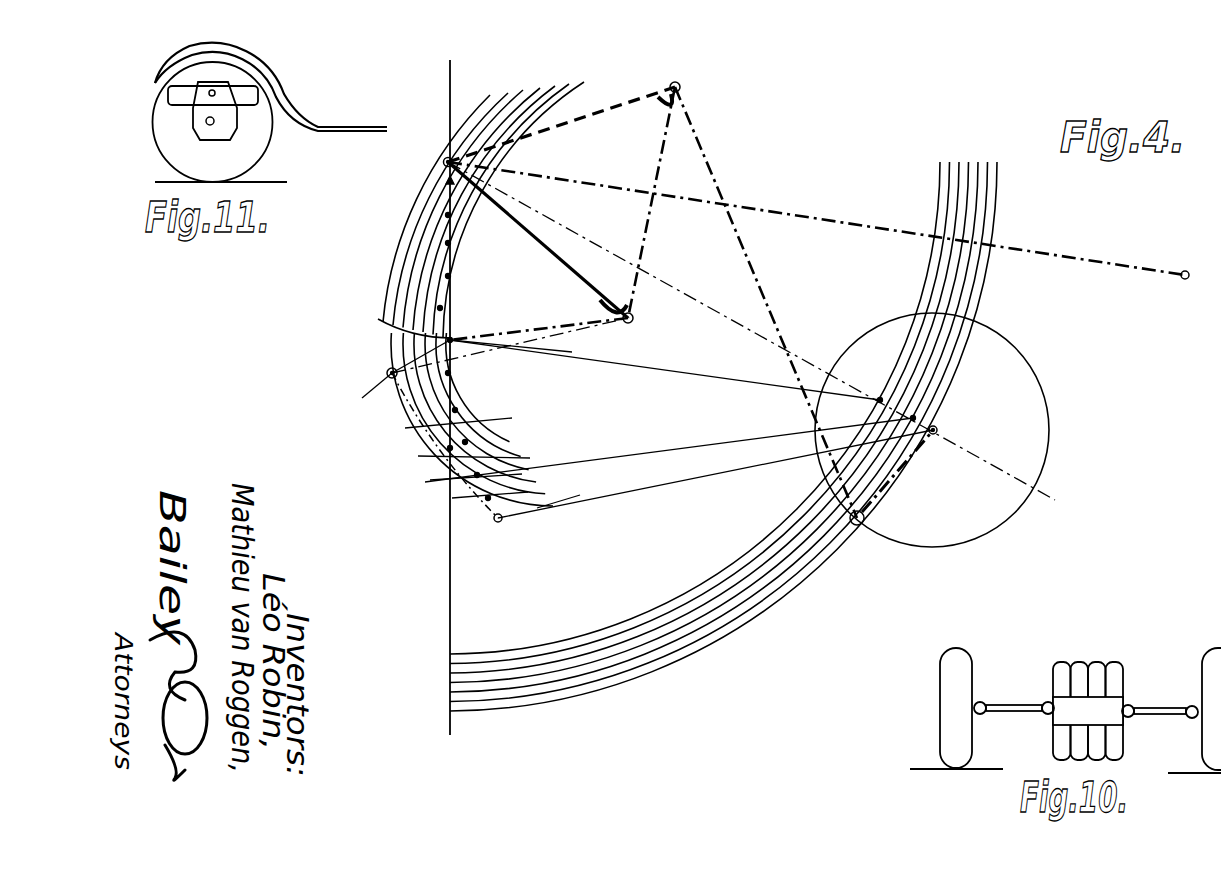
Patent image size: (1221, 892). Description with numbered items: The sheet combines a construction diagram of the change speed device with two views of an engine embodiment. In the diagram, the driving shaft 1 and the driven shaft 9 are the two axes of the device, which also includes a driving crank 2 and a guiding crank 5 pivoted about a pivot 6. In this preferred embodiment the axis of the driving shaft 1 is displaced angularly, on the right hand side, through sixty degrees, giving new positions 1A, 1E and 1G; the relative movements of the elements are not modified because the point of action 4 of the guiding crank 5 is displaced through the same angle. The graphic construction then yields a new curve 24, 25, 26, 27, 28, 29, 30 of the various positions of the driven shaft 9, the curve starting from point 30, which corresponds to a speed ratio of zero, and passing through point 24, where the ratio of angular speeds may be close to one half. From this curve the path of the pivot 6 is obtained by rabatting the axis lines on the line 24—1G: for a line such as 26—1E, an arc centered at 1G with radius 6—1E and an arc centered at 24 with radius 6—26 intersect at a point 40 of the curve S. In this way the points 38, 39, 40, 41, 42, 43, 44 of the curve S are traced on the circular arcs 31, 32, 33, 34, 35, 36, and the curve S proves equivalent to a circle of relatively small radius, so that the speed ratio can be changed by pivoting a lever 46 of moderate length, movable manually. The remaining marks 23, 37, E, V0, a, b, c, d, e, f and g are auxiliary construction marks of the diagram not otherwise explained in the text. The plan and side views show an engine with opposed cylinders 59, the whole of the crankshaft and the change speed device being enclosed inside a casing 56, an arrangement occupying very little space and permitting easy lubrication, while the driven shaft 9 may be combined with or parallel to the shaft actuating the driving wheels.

In FIG. 11, the driving shaft 1 is at (214, 91).
In FIG. 4, the driving crank 2 is at (893, 481).
In FIG. 4, the point of action of the guiding crank 4 is at (634, 316).
In FIG. 4, the guiding crank 5 is at (556, 239).
In FIG. 4, the pivot of the guiding crank 6 is at (447, 157).
In FIG. 11, the driven shaft 9 is at (207, 123).
In FIG. 4, the pivot of guide lever 23 is at (388, 371).
In FIG. 4, the point of the curve of positions of axis 9 24 is at (496, 521).
In FIG. 4, the point of the curve of positions of axis 9 25 is at (494, 516).
In FIG. 4, the point of the curve of positions of axis 9 26 is at (465, 443).
In FIG. 4, the point of the curve of positions of axis 9 27 is at (508, 433).
In FIG. 4, the point of the curve of positions of axis 9 28 is at (400, 402).
In FIG. 4, the point of the curve of positions of axis 9 29 is at (452, 374).
In FIG. 4, the starting point of the curve 30 is at (452, 336).
In FIG. 4, the circular arc 31 is at (444, 197).
In FIG. 4, the circular arc 32 is at (458, 198).
In FIG. 4, the circular arc 33 is at (472, 199).
In FIG. 4, the circular arc 34 is at (485, 200).
In FIG. 4, the circular arc 35 is at (498, 201).
In FIG. 4, the circular arc 36 is at (511, 203).
In FIG. 4, the wheel trajectory arc 37 is at (523, 204).
In FIG. 4, the point of curve S 38 is at (443, 162).
In FIG. 4, the point of curve S 39 is at (445, 184).
In FIG. 4, the point of curve S 40 is at (446, 215).
In FIG. 4, the point of curve S 41 is at (446, 243).
In FIG. 4, the point of curve S 42 is at (446, 277).
In FIG. 4, the point of curve S 43 is at (442, 308).
In FIG. 4, the point of curve S 44 is at (453, 340).
In FIG. 4, the lever 46 is at (835, 216).
In FIG. 11, the casing 56 is at (235, 127).
In FIG. 11, the opposed cylinders 59 is at (247, 97).
In FIG. 10, the opposed cylinders 59 is at (1120, 672).
In FIG. 4, the displaced position of axis 1 1A is at (868, 390).
In FIG. 4, the displaced position of axis 1 1E is at (907, 408).
In FIG. 4, the displaced position of axis 1 1G is at (932, 430).
In FIG. 4, the curve of the pivot path S is at (451, 261).
In FIG. 4, the line of wheel centre E is at (679, 429).
In FIG. 4, the initial position V0 is at (406, 324).
In FIG. 4, the point a is at (466, 422).
In FIG. 4, the point b is at (481, 457).
In FIG. 4, the point c is at (483, 473).
In FIG. 4, the point d is at (498, 490).
In FIG. 4, the point e is at (558, 510).
In FIG. 4, the point f is at (523, 517).
In FIG. 4, the point g is at (502, 521).